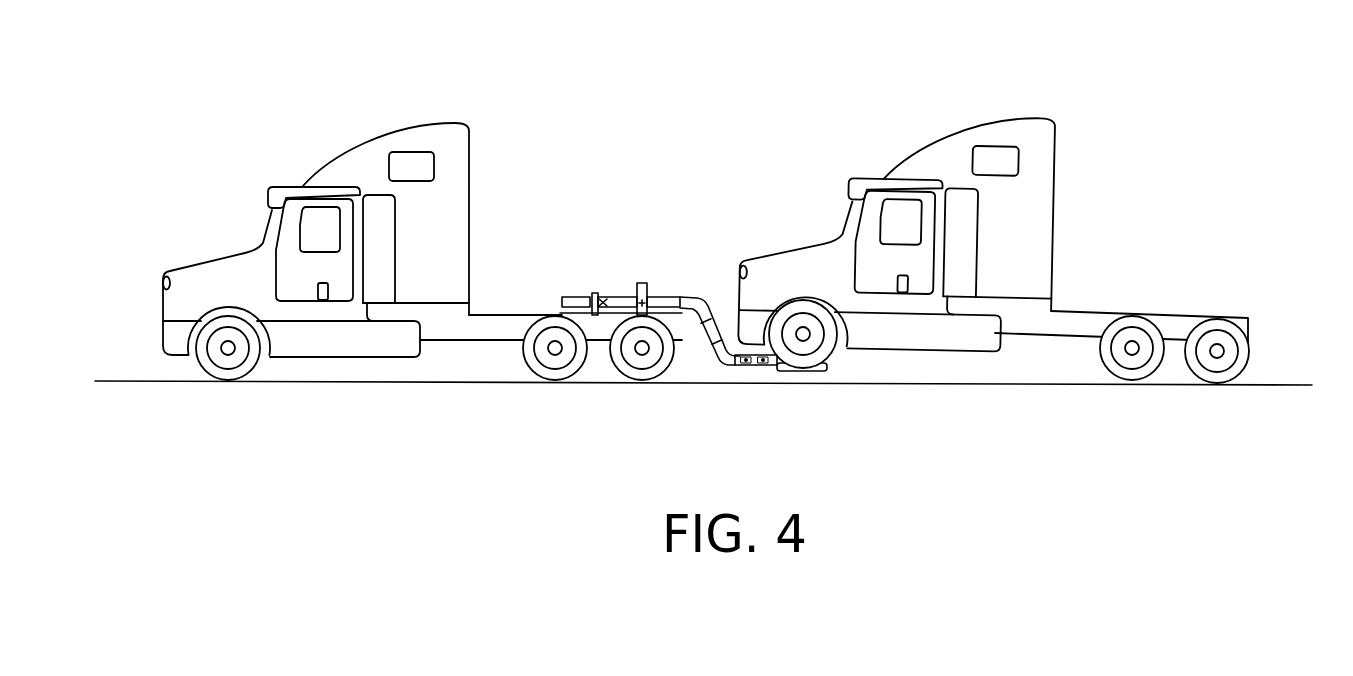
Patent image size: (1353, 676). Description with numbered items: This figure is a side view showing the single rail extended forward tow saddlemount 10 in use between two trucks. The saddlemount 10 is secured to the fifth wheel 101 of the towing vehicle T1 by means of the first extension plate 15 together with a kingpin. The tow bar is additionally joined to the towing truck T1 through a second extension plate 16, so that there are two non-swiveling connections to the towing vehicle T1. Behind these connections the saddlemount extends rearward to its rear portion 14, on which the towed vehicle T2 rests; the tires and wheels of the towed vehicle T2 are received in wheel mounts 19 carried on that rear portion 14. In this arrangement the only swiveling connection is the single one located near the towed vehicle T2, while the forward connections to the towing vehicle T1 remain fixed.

The towing vehicle T1 is at (335, 142).
The towed vehicle T2 is at (898, 147).
The single rail extended forward tow saddlemount 10 is at (613, 297).
The fifth wheel 101 is at (592, 312).
The first extension plate 15 is at (590, 305).
The extension plate 16 is at (648, 308).
The rear portion 14 is at (748, 368).
The wheel mounts 19 is at (823, 370).